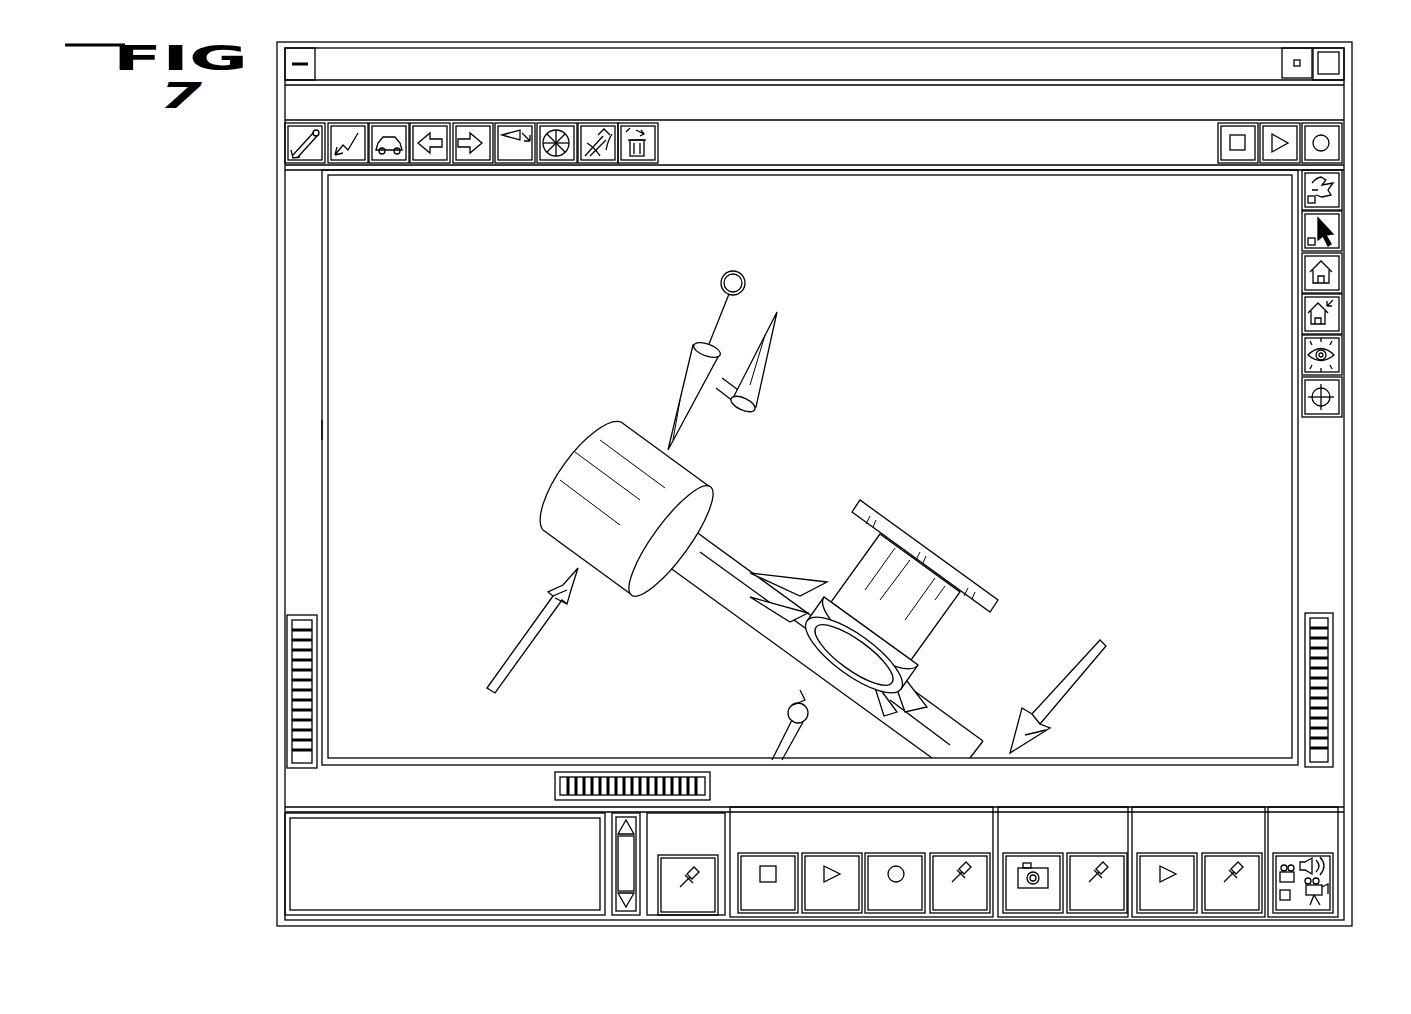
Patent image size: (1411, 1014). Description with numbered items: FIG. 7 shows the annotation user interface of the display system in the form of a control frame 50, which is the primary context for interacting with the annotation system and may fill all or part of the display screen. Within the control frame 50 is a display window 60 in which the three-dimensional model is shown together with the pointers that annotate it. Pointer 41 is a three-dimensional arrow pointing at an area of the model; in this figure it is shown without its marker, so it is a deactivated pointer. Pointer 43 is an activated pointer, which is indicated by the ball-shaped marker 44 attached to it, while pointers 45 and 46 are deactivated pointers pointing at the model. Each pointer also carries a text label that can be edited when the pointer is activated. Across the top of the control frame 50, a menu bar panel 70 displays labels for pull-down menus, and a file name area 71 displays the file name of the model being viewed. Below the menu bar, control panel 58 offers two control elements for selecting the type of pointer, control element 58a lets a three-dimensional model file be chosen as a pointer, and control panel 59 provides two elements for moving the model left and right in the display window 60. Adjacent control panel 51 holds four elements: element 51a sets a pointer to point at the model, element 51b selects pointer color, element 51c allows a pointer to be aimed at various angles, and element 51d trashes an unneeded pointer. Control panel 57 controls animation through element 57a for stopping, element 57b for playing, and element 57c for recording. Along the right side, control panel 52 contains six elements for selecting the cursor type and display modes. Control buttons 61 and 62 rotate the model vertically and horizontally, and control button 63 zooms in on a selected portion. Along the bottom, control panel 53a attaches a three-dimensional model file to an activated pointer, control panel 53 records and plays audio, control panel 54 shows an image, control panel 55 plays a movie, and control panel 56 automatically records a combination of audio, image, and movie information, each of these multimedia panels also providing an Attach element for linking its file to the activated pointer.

The pointer 41 is at (530, 630).
The pointer 43 is at (683, 380).
The marker 44 is at (742, 272).
The pointer 45 is at (1075, 685).
The pointer 46 is at (785, 735).
The control frame 50 is at (1349, 530).
The control panel 51 is at (658, 170).
The control element 51a is at (500, 122).
The control element 51b is at (552, 122).
The control element 51c is at (598, 122).
The control element 51d is at (645, 122).
The control panel 52 is at (1344, 172).
The control panel 53 is at (862, 807).
The control panel 53a is at (740, 805).
The control panel 54 is at (1060, 807).
The control panel 55 is at (1185, 807).
The control panel 56 is at (1338, 836).
The control panel 57 is at (1340, 118).
The control element 57a is at (1238, 165).
The control element 57b is at (1285, 165).
The control element 57c is at (1343, 140).
The control panel 58 is at (290, 168).
The control element 58a is at (385, 165).
The control panel 59 is at (490, 170).
The display window 60 is at (322, 430).
The control button 61 is at (302, 612).
The control button 62 is at (712, 792).
The control button 63 is at (1320, 613).
The menu bar panel 70 is at (313, 92).
The file name area 71 is at (440, 70).